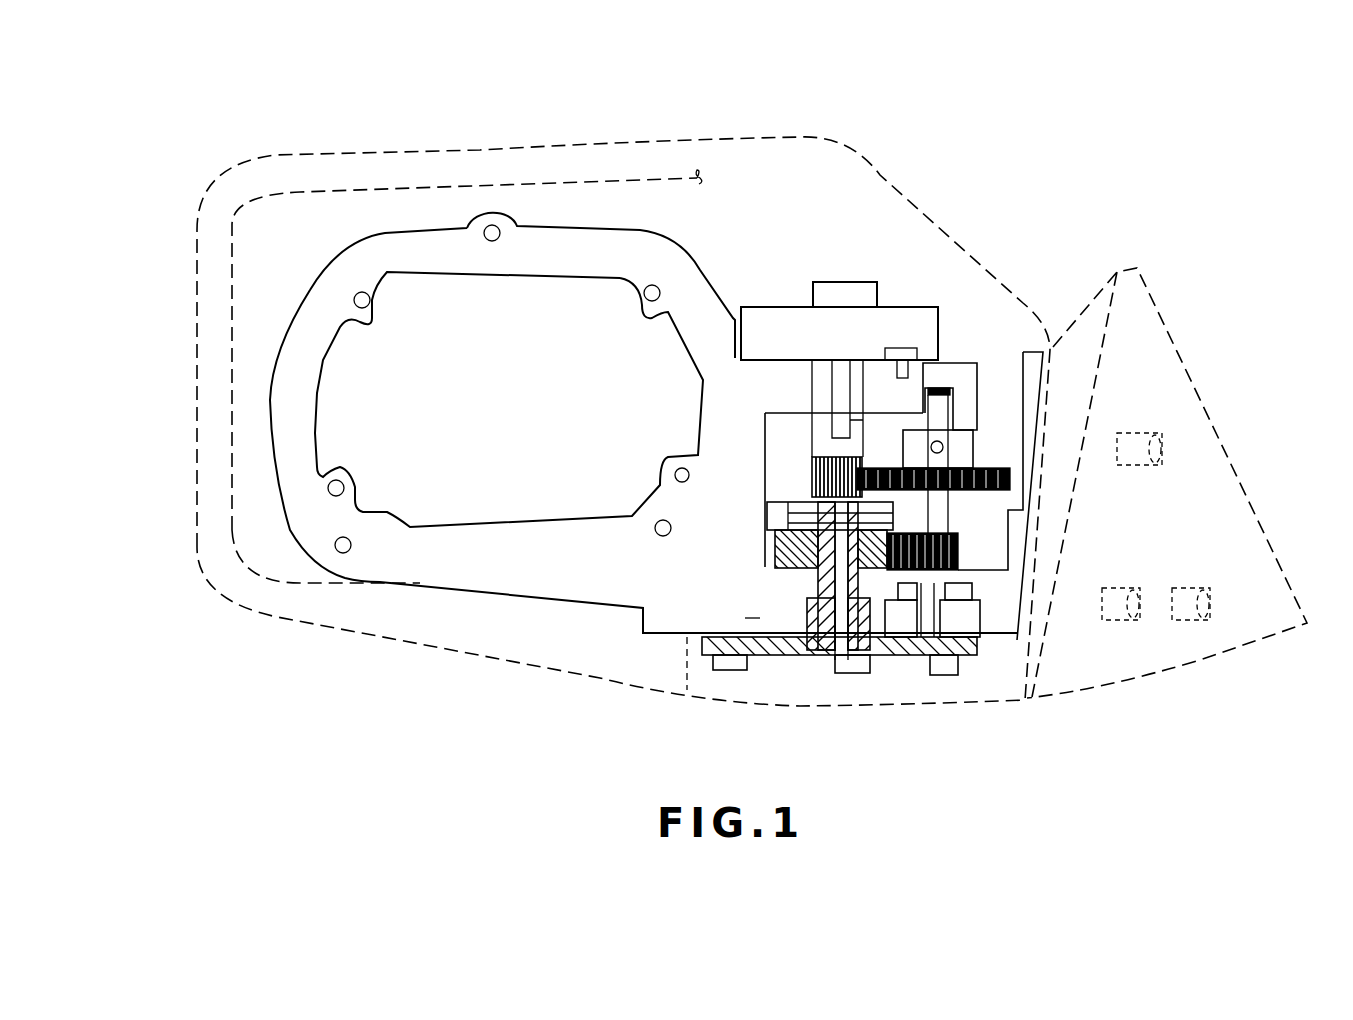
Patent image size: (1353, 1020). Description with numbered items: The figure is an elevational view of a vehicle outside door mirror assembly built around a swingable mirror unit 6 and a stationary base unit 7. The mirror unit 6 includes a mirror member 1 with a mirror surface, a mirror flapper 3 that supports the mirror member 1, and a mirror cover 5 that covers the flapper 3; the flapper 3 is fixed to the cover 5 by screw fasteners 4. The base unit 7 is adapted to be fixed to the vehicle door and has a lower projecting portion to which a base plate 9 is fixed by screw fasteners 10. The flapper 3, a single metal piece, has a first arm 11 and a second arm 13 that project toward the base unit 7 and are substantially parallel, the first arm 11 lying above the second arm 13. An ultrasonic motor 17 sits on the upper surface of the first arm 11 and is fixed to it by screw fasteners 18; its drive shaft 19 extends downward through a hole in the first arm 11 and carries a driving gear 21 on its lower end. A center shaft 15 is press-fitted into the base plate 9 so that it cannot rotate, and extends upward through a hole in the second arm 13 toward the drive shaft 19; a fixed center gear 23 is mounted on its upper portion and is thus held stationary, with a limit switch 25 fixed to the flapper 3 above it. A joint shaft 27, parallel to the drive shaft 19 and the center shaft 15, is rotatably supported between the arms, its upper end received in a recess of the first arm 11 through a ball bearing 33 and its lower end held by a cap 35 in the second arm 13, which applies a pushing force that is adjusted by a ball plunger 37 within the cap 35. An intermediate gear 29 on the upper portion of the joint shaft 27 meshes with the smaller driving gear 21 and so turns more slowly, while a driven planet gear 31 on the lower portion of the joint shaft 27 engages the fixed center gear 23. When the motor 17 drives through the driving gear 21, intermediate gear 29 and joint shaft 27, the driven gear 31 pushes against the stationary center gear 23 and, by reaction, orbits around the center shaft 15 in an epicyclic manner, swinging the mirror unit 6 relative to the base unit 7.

The mirror member 1 is at (347, 410).
The mirror flapper 3 is at (417, 240).
The screw fasteners 4 is at (497, 231).
The mirror cover 5 is at (484, 148).
The swingable mirror unit 6 is at (942, 210).
The stationary base unit 7 is at (1210, 490).
The base plate 9 is at (793, 653).
The screw fasteners 10 is at (727, 668).
The first arm 11 is at (943, 362).
The second arm 13 is at (775, 623).
The center shaft 15 is at (817, 657).
The ultrasonic motor 17 is at (783, 318).
The screw fasteners 18 is at (915, 350).
The drive shaft 19 is at (840, 392).
The driving gear 21 is at (820, 478).
The fixed center gear 23 is at (775, 570).
The limit switch 25 is at (770, 527).
The joint shaft 27 is at (940, 512).
The intermediate gear 29 is at (1010, 470).
The driven planet gear 31 is at (950, 550).
The ball bearing 33 is at (940, 390).
The cap 35 is at (975, 620).
The ball plunger 37 is at (934, 600).